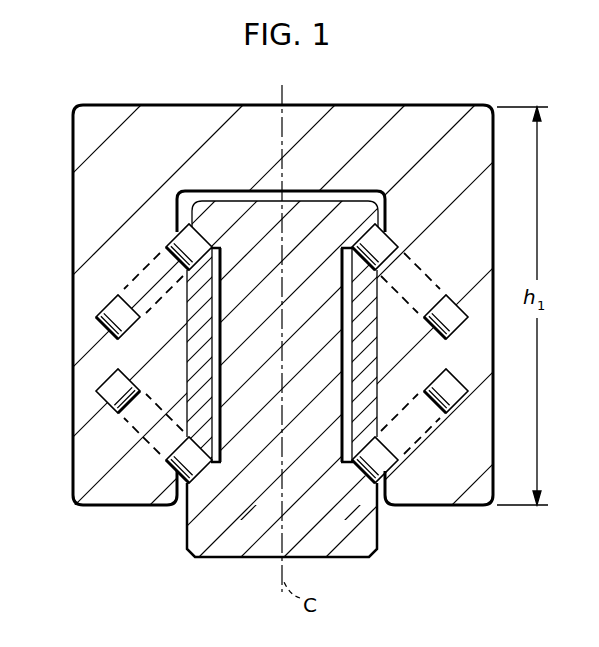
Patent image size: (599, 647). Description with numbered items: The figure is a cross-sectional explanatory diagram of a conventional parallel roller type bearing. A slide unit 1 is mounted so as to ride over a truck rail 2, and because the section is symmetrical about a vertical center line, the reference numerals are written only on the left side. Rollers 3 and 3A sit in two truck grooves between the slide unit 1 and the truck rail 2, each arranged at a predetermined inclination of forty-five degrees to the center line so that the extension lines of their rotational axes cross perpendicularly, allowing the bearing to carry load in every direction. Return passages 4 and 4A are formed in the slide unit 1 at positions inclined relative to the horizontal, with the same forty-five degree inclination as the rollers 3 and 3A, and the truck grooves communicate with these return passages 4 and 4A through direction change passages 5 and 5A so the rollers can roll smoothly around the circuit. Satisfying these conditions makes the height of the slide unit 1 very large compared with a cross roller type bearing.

The slide unit 1 is at (90, 209).
The truck rail 2 is at (210, 537).
The roller 3 is at (190, 222).
The roller 3A is at (200, 477).
The return passage 4 is at (95, 302).
The return passage 4A is at (103, 392).
The direction change passage 5 is at (137, 275).
The direction change passage 5A is at (133, 436).